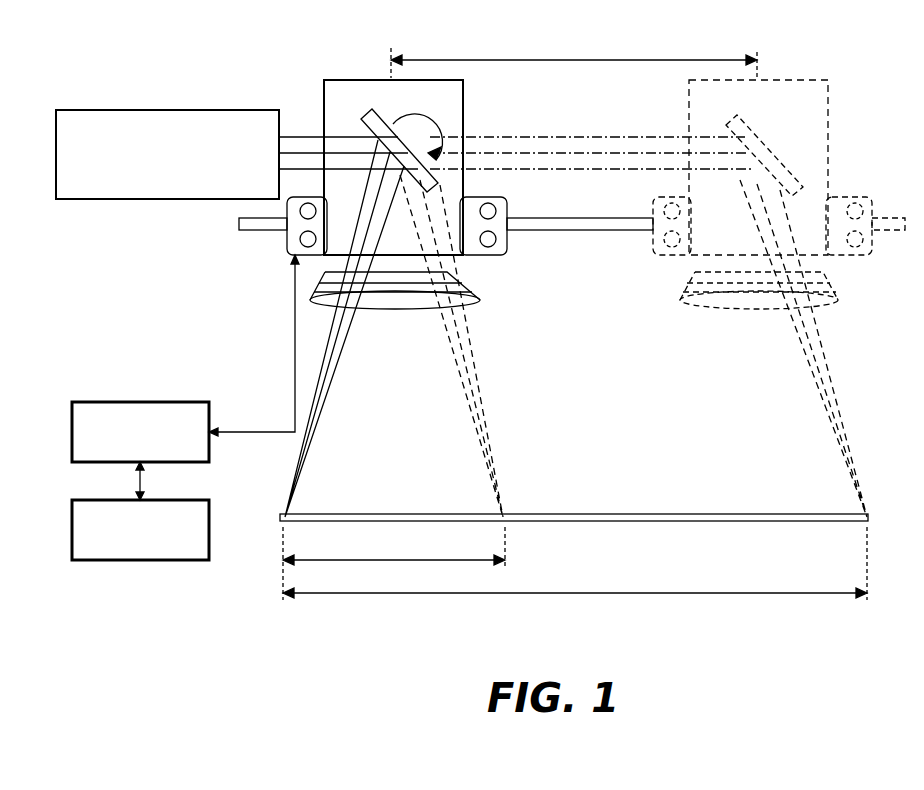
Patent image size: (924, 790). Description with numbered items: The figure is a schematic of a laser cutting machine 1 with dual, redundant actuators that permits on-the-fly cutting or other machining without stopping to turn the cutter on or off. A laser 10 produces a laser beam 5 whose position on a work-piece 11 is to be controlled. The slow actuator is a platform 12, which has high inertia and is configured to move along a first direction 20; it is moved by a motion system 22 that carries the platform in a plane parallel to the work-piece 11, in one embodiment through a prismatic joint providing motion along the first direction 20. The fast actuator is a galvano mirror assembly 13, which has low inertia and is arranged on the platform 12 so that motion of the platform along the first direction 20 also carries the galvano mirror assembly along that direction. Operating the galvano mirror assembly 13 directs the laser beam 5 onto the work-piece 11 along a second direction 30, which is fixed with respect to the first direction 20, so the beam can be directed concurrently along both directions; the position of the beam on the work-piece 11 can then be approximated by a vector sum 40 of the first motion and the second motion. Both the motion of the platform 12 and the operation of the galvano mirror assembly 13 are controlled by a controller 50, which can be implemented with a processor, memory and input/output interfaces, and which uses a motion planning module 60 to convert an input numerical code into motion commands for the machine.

The laser cutting machine 1 is at (222, 323).
The laser beam 5 is at (465, 372).
The laser 10 is at (150, 110).
The work-piece 11 is at (645, 517).
The platform 12 is at (289, 215).
The galvano mirror assembly 13 is at (337, 73).
The first direction 20 is at (598, 60).
The motion system 22 is at (583, 232).
The second direction 30 is at (380, 560).
The vector sum 40 is at (610, 573).
The controller 50 is at (143, 402).
The motion planning module 60 is at (160, 562).